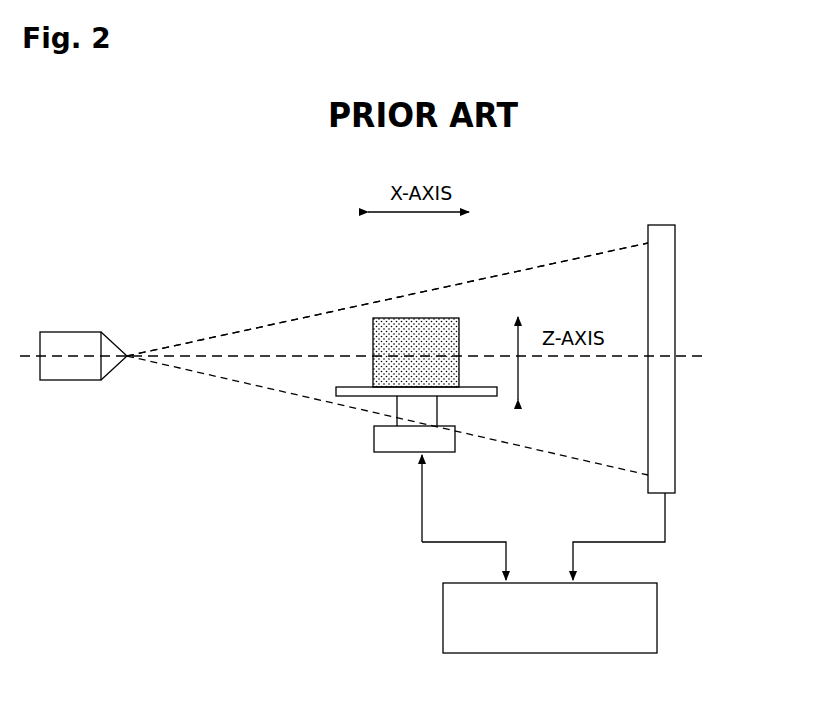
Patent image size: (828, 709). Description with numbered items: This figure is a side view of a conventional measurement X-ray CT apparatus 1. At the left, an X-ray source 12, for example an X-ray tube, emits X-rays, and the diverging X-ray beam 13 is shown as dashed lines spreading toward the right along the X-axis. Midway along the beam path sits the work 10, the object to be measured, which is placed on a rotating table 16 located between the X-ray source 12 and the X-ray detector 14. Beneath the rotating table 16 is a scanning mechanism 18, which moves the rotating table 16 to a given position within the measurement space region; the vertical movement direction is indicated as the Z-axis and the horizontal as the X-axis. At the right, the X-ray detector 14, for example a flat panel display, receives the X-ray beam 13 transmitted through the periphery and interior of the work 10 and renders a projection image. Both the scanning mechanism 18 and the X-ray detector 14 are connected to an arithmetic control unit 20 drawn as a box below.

The measurement X-ray CT apparatus 1 is at (267, 214).
The work 10 is at (420, 347).
The X-ray source 12 is at (63, 332).
The X-ray beam 13 is at (258, 326).
The X-ray detector 14 is at (675, 462).
The rotating table 16 is at (367, 396).
The scanning mechanism 18 is at (455, 440).
The arithmetic control unit 20 is at (638, 583).